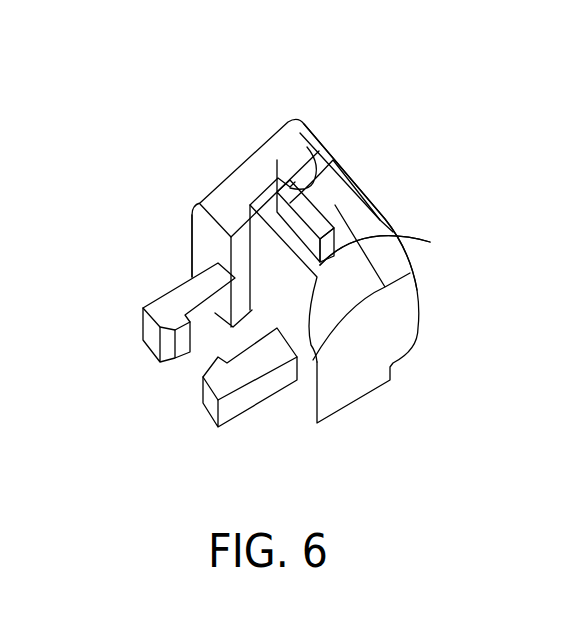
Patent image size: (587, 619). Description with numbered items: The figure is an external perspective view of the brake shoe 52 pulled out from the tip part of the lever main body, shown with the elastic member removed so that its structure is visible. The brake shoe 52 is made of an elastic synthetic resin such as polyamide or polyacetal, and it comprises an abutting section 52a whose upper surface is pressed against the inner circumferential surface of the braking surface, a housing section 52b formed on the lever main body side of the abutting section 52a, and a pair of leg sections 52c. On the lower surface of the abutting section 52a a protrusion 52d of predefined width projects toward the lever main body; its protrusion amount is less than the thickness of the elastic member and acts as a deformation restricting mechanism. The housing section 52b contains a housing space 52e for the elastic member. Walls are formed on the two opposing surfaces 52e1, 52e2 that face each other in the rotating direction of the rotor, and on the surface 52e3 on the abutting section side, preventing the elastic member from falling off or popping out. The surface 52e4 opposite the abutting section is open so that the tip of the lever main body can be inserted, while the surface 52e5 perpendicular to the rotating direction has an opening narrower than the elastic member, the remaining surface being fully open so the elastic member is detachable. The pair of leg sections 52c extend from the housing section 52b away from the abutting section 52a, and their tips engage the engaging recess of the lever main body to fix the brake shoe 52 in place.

The brake shoe 52 is at (333, 136).
The abutting section 52a is at (361, 200).
The housing section 52b is at (248, 172).
The leg sections 52c is at (217, 403).
The protrusion 52d is at (317, 215).
The housing space 52e is at (253, 194).
The surface 52e1 is at (278, 158).
The surface 52e2 is at (380, 230).
The surface 52e3 is at (330, 182).
The surface 52e4 is at (228, 238).
The surface 52e5 is at (265, 285).